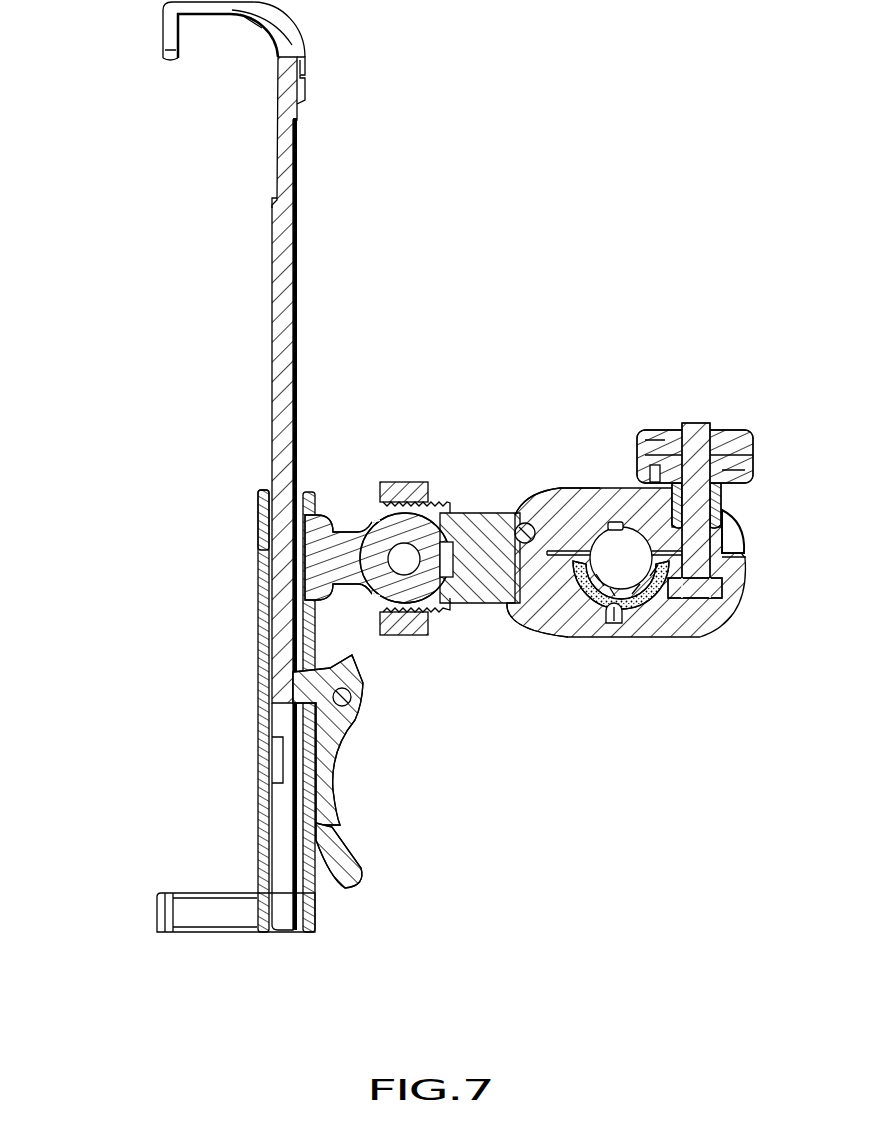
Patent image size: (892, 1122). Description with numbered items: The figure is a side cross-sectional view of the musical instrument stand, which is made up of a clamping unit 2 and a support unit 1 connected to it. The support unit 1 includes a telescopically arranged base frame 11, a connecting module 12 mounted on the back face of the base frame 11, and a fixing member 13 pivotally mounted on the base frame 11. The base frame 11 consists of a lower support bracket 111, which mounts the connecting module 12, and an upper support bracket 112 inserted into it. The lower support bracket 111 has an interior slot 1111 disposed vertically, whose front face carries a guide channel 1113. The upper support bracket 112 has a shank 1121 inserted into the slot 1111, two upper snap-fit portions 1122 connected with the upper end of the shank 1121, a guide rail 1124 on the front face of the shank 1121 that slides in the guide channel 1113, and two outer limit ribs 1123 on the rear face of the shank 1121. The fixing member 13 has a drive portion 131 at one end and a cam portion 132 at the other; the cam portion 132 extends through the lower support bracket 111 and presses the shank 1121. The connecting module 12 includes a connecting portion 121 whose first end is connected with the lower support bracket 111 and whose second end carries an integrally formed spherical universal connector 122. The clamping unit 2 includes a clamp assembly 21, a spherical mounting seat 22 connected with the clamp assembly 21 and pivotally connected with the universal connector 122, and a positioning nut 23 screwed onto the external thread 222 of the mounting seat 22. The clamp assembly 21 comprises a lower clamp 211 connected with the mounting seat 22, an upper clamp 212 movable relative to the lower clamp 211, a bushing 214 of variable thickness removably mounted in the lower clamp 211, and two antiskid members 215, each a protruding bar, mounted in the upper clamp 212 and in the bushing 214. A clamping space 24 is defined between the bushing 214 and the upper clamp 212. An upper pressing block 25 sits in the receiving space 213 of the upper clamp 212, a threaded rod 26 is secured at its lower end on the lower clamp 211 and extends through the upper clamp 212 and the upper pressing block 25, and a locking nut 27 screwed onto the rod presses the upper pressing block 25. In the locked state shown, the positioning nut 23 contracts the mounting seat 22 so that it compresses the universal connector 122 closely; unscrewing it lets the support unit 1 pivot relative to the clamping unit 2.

The support unit 1 is at (108, 632).
The base frame 11 is at (205, 655).
The lower support bracket 111 is at (255, 602).
The slot 1111 is at (260, 547).
The guide channel 1113 is at (260, 518).
The upper support bracket 112 is at (265, 368).
The shank 1121 is at (283, 296).
The upper snap-fit portions 1122 is at (202, 8).
The outer limit ribs 1123 is at (298, 166).
The guide rail 1124 is at (273, 208).
The connecting module 12 is at (355, 462).
The connecting portion 121 is at (345, 548).
The universal connector 122 is at (403, 535).
The fixing member 13 is at (372, 778).
The drive portion 131 is at (335, 845).
The cam portion 132 is at (302, 690).
The clamping unit 2 is at (548, 400).
The clamp assembly 21 is at (525, 480).
The lower clamp 211 is at (582, 622).
The upper clamp 212 is at (570, 510).
The receiving space 213 is at (633, 487).
The bushing 214 is at (592, 624).
The antiskid members 215 is at (615, 522).
The mounting seat 22 is at (440, 450).
The external thread 222 is at (450, 518).
The positioning nut 23 is at (413, 637).
The clamping space 24 is at (600, 565).
The upper pressing block 25 is at (720, 498).
The threaded rod 26 is at (698, 538).
The locking nut 27 is at (740, 432).